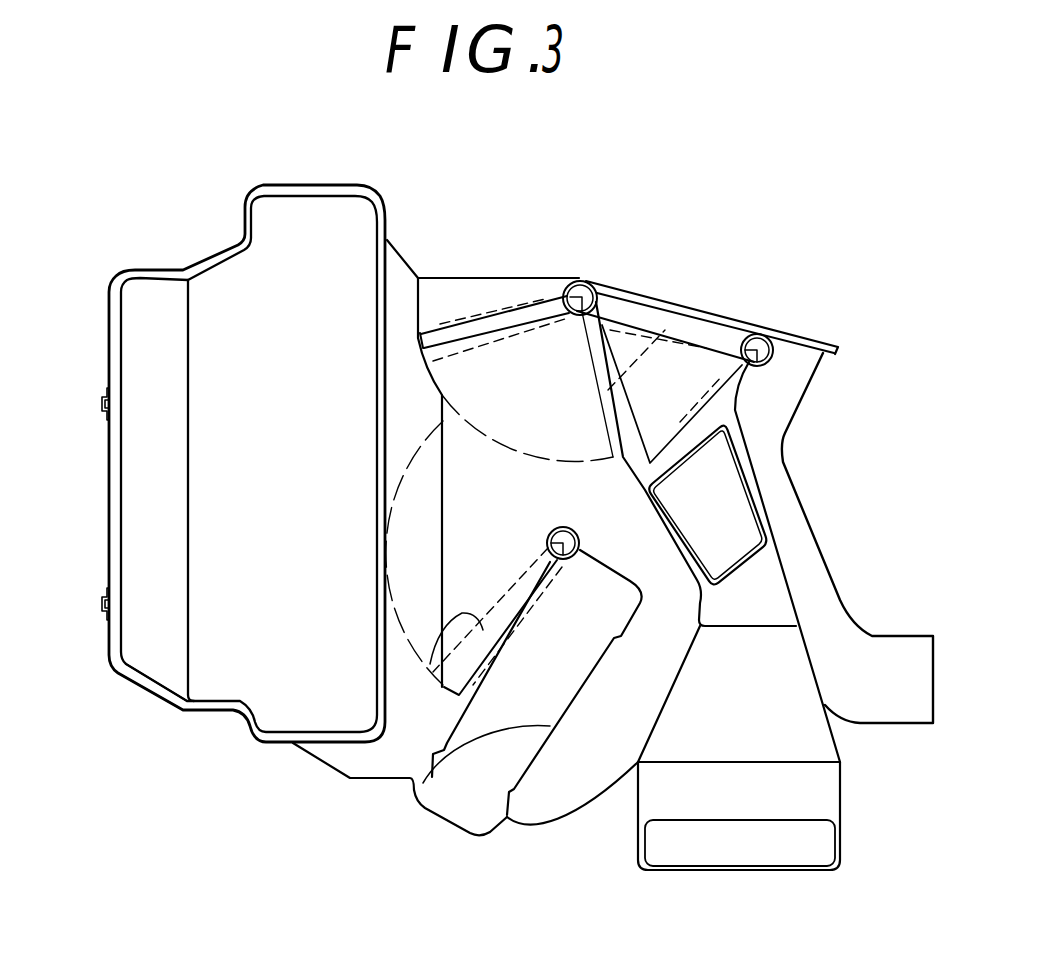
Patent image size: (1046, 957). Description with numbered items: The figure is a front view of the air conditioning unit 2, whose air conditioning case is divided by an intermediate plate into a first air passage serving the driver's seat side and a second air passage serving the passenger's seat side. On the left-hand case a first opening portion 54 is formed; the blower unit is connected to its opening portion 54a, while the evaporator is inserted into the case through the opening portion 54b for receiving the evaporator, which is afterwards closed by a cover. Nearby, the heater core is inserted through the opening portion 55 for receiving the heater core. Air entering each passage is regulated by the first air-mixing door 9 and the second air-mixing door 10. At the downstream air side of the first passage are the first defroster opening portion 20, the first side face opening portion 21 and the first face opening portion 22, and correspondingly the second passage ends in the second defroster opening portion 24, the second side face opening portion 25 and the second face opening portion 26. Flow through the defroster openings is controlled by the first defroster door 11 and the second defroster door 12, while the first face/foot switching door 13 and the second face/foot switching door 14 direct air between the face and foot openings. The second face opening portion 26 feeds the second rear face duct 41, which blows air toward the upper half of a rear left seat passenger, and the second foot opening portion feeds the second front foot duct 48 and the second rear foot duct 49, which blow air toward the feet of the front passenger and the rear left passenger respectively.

The air conditioning unit 2 is at (130, 256).
The first opening portion 54 is at (110, 512).
The opening portion 54a is at (150, 687).
The opening portion for receiving the evaporator 54b is at (317, 737).
The first defroster opening portion 20 is at (544, 505).
The second defroster opening portion 24 is at (447, 292).
The first defroster door 11 is at (508, 286).
The second defroster door 12 is at (520, 310).
The first side face opening portion 21 is at (712, 265).
The first face opening portion 22 is at (712, 265).
The second side face opening portion 25 is at (712, 265).
The second face opening portion 26 is at (653, 312).
The first face/foot switching door 13 is at (745, 310).
The second face/foot switching door 14 is at (717, 347).
The first air-mixing door 9 is at (445, 679).
The second air-mixing door 10 is at (443, 688).
The opening portion for receiving the heater core 55 is at (450, 813).
The second front foot duct 48 is at (732, 567).
The second rear face duct 41 is at (825, 598).
The second rear foot duct 49 is at (680, 797).